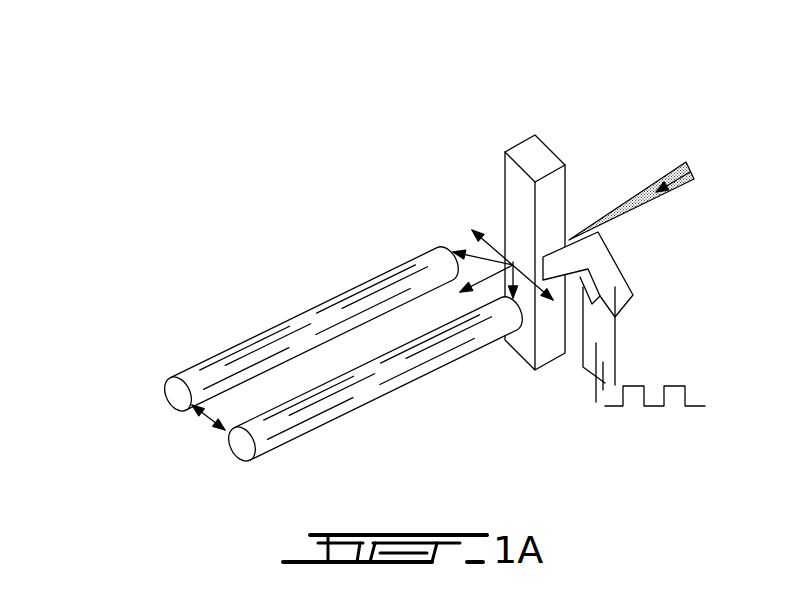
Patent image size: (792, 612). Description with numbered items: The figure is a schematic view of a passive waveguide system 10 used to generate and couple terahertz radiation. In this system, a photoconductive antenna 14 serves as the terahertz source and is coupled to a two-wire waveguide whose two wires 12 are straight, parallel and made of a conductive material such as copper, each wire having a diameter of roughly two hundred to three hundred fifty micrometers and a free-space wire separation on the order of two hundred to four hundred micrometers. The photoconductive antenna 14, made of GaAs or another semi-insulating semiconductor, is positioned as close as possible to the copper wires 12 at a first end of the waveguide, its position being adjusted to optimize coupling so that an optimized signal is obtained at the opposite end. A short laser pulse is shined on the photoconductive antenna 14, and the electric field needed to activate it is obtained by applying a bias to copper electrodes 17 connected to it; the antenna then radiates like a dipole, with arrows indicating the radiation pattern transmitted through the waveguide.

The passive waveguide system 10 is at (245, 210).
The wires of the two-wire waveguide 12 is at (387, 276).
The photoconductive antenna 14 is at (545, 150).
The copper electrodes 17 is at (571, 226).